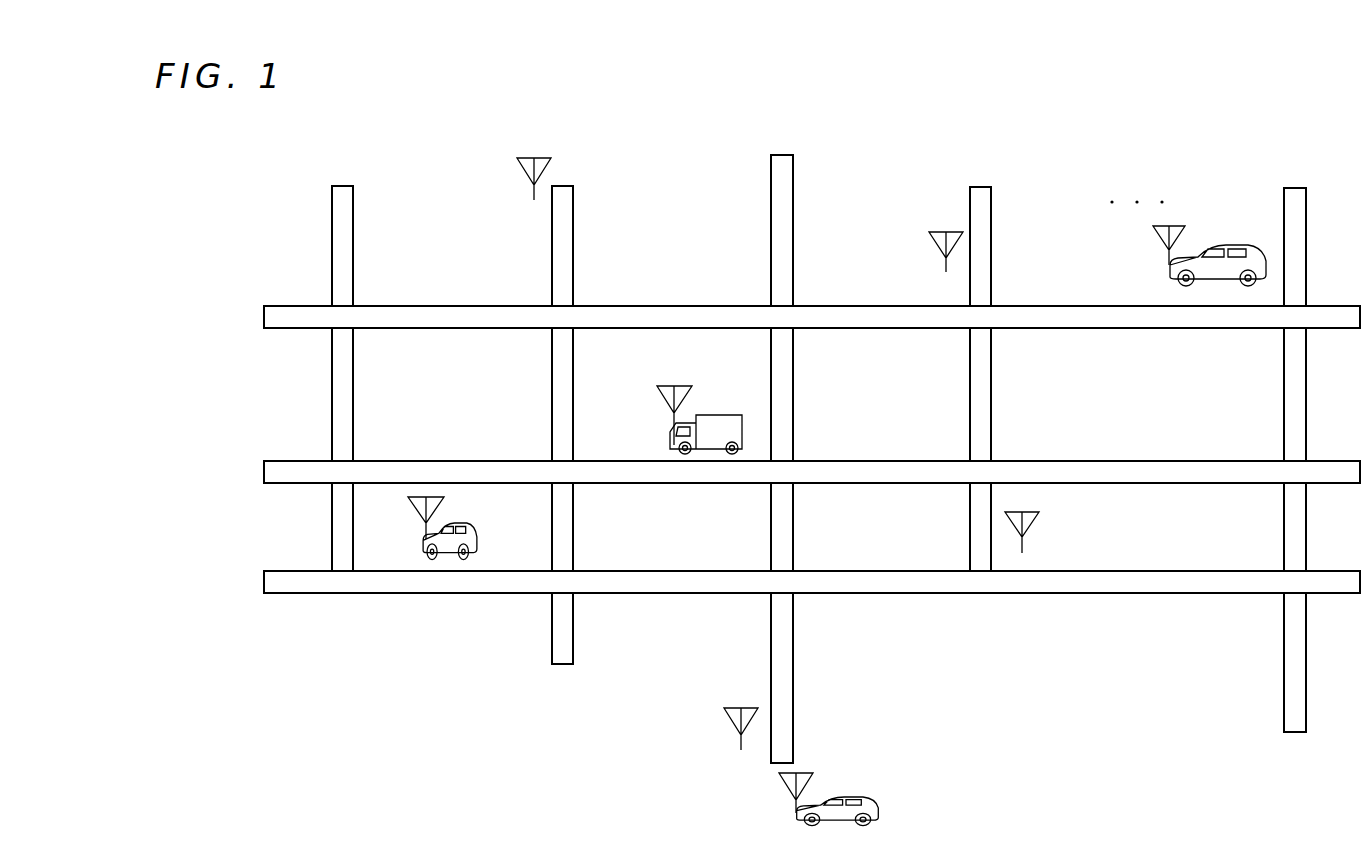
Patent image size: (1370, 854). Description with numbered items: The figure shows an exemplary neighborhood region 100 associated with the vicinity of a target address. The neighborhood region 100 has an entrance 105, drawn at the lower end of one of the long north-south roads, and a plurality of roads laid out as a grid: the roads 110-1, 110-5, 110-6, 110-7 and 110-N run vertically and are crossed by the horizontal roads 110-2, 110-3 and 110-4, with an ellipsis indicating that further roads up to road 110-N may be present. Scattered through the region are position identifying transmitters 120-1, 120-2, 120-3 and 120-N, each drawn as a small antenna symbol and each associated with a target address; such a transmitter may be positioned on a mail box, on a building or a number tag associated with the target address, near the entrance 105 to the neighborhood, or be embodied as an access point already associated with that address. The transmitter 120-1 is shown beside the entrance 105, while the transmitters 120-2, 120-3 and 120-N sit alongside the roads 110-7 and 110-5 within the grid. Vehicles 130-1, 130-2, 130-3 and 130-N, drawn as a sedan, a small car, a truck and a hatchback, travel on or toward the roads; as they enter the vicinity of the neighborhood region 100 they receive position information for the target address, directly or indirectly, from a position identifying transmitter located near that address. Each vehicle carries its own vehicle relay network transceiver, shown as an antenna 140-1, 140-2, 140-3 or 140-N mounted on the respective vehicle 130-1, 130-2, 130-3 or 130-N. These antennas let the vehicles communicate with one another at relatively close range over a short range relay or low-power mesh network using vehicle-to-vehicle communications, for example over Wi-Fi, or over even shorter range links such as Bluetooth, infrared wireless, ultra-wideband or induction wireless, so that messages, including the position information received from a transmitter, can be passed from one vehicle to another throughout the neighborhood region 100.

The neighborhood region 100 is at (896, 405).
The entrance 105 is at (794, 745).
The road 110-1 is at (342, 186).
The road 110-2 is at (264, 314).
The road 110-3 is at (264, 467).
The road 110-4 is at (264, 577).
The road 110-5 is at (562, 186).
The road 110-6 is at (781, 155).
The road 110-7 is at (980, 187).
The road 110-N is at (1295, 188).
The position identifying transmitter 120-1 is at (733, 728).
The position identifying transmitter 120-2 is at (1030, 528).
The position identifying transmitter 120-3 is at (940, 245).
The position identifying transmitter 120-N is at (528, 180).
The vehicle 130-1 is at (875, 803).
The vehicle 130-2 is at (472, 526).
The vehicle 130-3 is at (720, 415).
The vehicle 130-N is at (1231, 245).
The antenna 140-1 is at (790, 793).
The antenna 140-2 is at (436, 516).
The antenna 140-3 is at (667, 406).
The antenna 140-N is at (1162, 246).